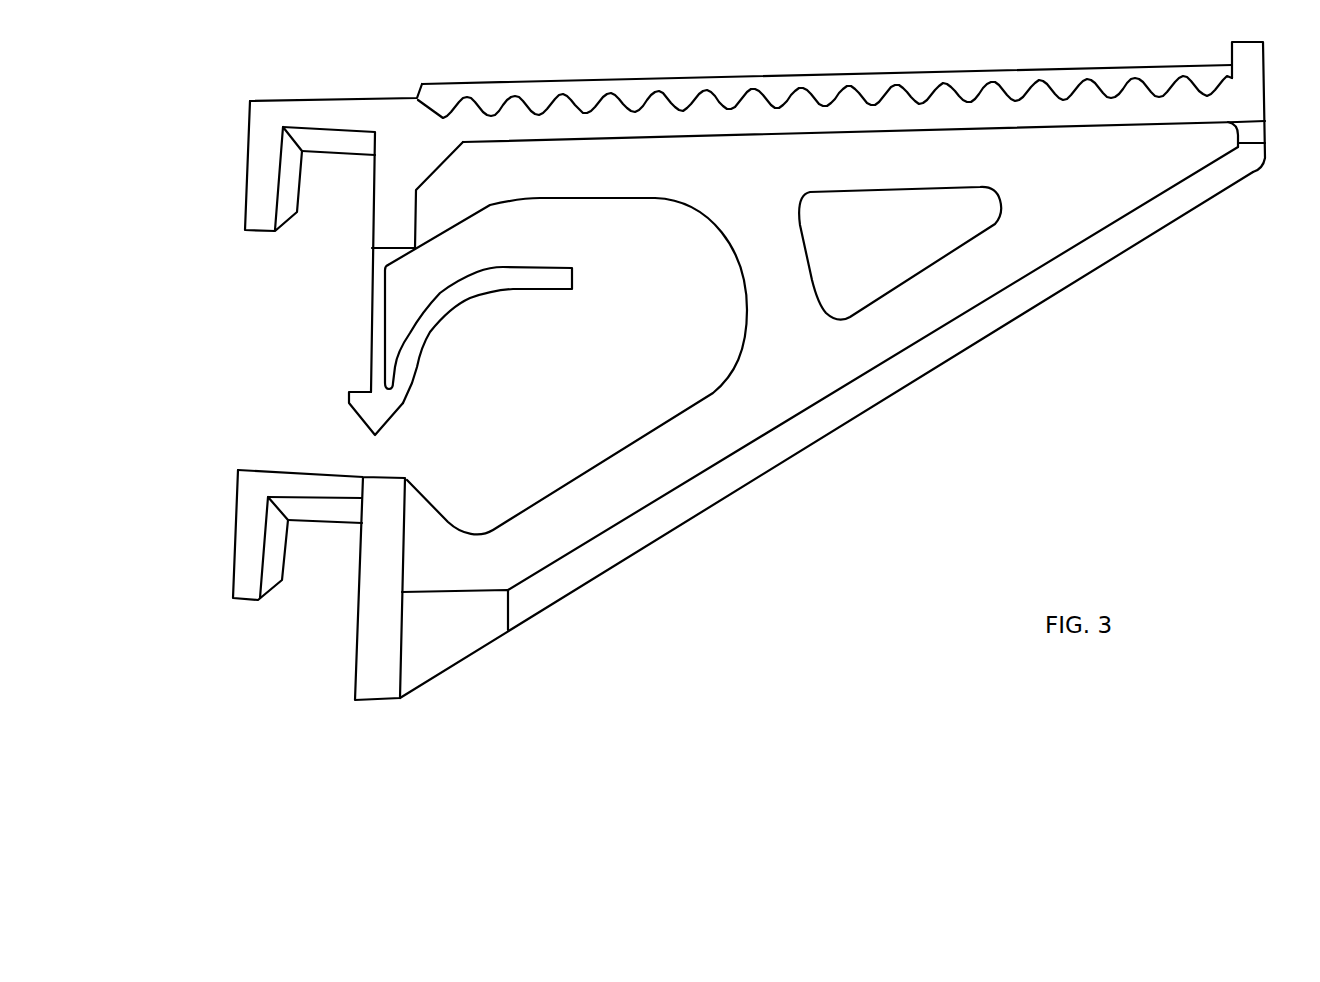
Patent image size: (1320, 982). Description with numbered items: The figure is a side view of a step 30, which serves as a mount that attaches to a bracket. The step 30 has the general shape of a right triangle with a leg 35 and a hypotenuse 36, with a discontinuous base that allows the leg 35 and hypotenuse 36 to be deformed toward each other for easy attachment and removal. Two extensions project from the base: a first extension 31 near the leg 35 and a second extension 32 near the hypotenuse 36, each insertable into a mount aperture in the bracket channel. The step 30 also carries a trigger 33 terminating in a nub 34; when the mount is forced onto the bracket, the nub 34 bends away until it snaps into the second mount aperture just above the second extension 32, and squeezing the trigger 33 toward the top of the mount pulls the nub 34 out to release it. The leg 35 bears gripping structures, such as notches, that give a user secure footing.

The step 30 is at (1117, 278).
The first extension 31 is at (262, 156).
The second extension 32 is at (247, 530).
The trigger 33 is at (577, 283).
The nub 34 is at (348, 400).
The leg 35 is at (757, 75).
The hypotenuse 36 is at (893, 397).